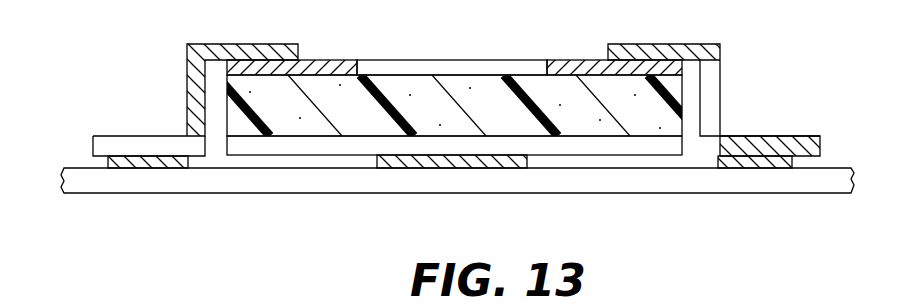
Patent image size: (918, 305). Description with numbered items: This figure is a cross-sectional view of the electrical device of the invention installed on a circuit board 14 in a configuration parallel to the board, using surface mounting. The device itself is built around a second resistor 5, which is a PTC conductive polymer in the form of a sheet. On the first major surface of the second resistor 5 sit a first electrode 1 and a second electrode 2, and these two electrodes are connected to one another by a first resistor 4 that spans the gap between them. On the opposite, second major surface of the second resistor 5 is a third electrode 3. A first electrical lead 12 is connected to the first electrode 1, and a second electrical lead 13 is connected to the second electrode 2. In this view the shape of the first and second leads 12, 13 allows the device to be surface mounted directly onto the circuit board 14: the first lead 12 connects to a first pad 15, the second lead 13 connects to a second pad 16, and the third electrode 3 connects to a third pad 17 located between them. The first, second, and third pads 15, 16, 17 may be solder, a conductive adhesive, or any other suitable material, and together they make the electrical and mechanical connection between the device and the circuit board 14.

The first electrode 1 is at (315, 67).
The second electrode 2 is at (565, 65).
The third electrode 3 is at (573, 152).
The first resistor 4 is at (465, 70).
The second resistor 5 is at (692, 93).
The first electrical lead 12 is at (195, 97).
The second electrical lead 13 is at (712, 75).
The circuit board 14 is at (650, 182).
The first pad 15 is at (158, 160).
The second pad 16 is at (763, 167).
The third pad 17 is at (430, 162).